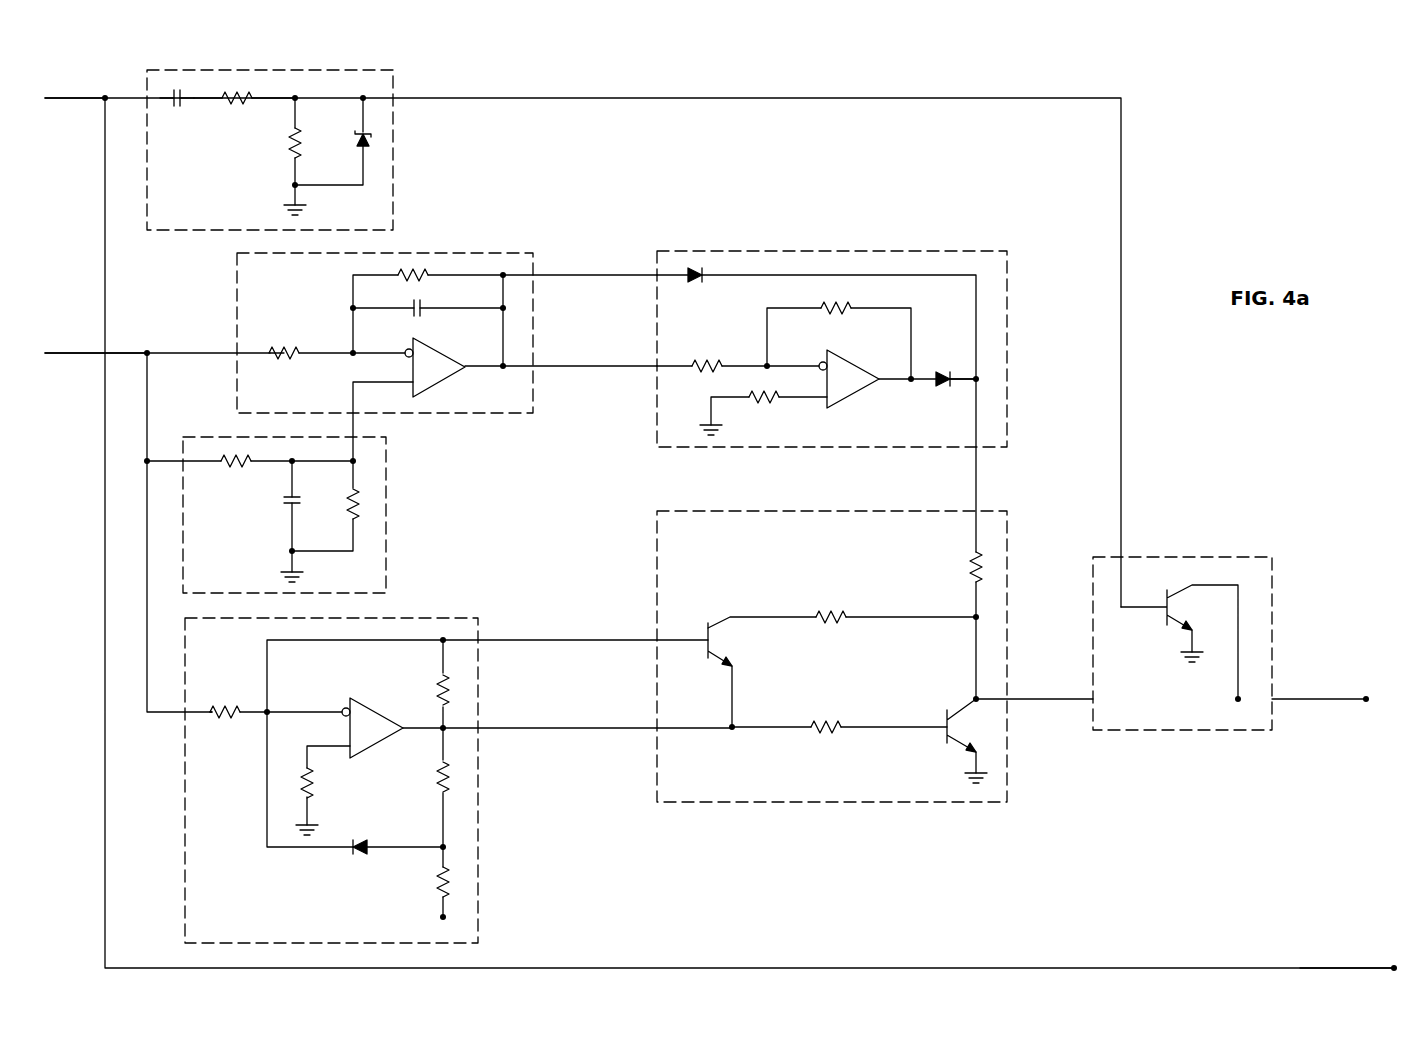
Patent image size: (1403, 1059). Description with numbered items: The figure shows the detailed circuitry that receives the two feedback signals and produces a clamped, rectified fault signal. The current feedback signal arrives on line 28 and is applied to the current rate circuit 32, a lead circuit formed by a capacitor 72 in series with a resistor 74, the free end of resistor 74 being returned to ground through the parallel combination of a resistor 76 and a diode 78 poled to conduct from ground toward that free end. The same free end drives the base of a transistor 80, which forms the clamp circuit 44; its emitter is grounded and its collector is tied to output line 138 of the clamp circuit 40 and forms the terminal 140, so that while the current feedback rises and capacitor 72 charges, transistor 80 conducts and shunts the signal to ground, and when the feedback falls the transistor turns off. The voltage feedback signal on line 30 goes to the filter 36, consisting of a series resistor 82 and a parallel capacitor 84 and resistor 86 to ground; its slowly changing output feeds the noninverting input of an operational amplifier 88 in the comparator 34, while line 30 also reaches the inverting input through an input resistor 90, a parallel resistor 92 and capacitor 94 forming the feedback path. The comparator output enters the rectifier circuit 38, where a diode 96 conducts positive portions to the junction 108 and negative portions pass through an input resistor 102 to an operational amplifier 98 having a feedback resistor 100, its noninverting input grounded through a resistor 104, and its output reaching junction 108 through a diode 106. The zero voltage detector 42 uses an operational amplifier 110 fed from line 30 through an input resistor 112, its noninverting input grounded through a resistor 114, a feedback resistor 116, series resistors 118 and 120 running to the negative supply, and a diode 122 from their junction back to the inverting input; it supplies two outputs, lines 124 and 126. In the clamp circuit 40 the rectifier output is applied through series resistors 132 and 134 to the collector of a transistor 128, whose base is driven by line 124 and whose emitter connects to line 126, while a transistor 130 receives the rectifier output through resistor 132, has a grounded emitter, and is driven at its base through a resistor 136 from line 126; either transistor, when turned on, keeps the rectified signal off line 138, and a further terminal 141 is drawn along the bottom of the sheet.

The line 28 is at (70, 98).
The voltage feedback signal line 30 is at (70, 352).
The current rate circuit 32 is at (396, 152).
The comparator 34 is at (489, 253).
The filter 36 is at (390, 468).
The rectifier circuit 38 is at (802, 251).
The clamp circuit 40 is at (1008, 522).
The zero voltage detector 42 is at (460, 607).
The clamp circuit 44 is at (1242, 548).
The capacitor 72 is at (180, 116).
The resistor 74 is at (240, 116).
The resistor 76 is at (283, 150).
The diode 78 is at (351, 138).
The transistor 80 is at (1154, 620).
The series resistor 82 is at (232, 470).
The capacitor 84 is at (280, 500).
The resistor 86 is at (342, 504).
The operational amplifier 88 is at (470, 380).
The series input resistor 90 is at (290, 362).
The resistor 92 is at (426, 282).
The capacitor 94 is at (428, 318).
The diode 96 is at (698, 284).
The operational amplifier 98 is at (848, 402).
The feedback resistor 100 is at (842, 316).
The input resistor 102 is at (724, 356).
The resistor 104 is at (776, 405).
The diode 106 is at (945, 386).
The terminal 108 is at (972, 374).
The operational amplifier 110 is at (393, 710).
The input resistor 112 is at (228, 696).
The resistor 114 is at (318, 776).
The feedback resistor 116 is at (433, 676).
The resistor 118 is at (436, 780).
The resistor 120 is at (431, 887).
The diode 122 is at (360, 858).
The line 124 is at (596, 634).
The line 126 is at (588, 718).
The transistor 128 is at (727, 634).
The transistor 130 is at (948, 744).
The resistor 132 is at (968, 568).
The resistor 134 is at (838, 628).
The resistor 136 is at (856, 712).
The line 138 is at (1048, 712).
The terminal 140 is at (1358, 712).
The ground return terminal 141 is at (1384, 962).